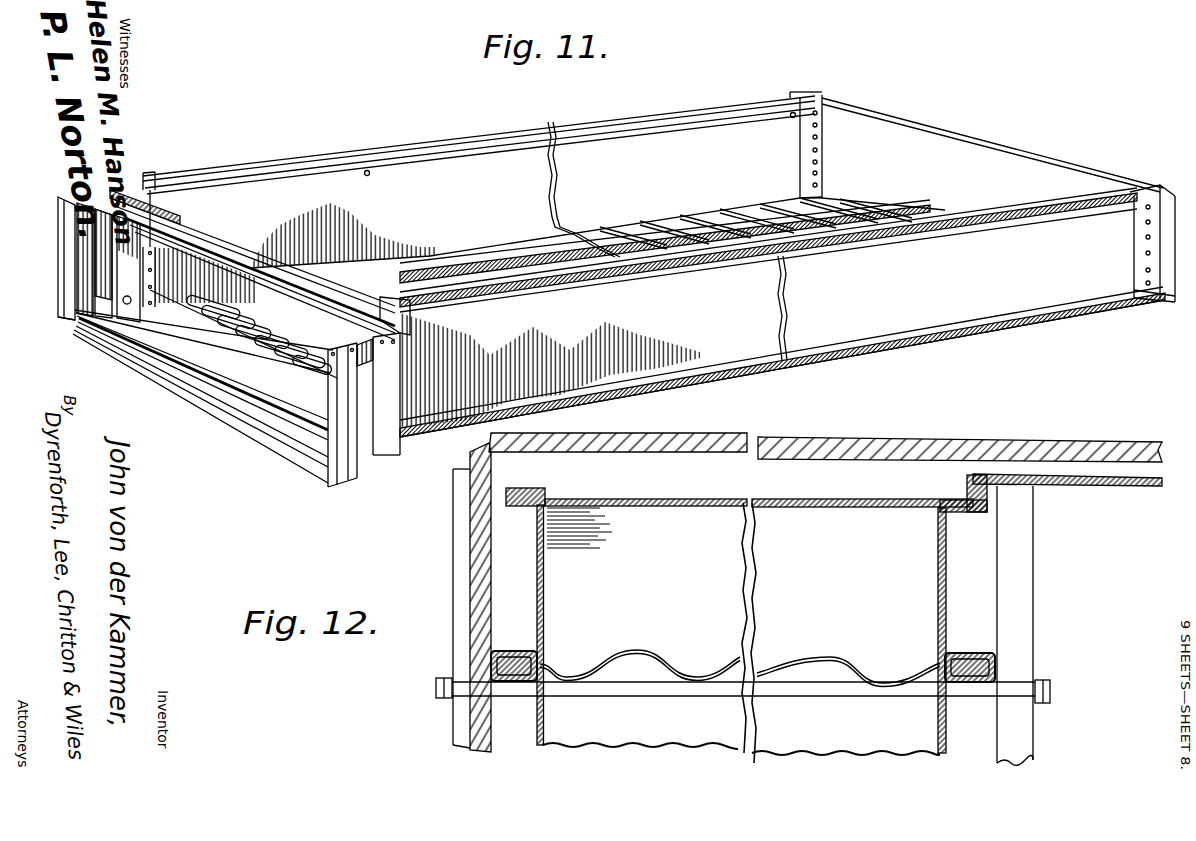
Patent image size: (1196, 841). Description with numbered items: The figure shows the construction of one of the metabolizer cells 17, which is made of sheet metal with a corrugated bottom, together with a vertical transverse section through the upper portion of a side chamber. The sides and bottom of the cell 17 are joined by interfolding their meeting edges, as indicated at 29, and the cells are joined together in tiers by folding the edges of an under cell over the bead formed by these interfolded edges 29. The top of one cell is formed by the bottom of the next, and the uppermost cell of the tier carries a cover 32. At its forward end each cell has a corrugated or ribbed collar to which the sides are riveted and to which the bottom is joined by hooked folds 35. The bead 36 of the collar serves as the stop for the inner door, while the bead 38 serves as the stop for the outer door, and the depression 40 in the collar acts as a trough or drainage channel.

In FIG. 11, the cell 17 is at (531, 312).
In FIG. 12, the cell 17 is at (741, 633).
In FIG. 11, the interfolded edges 29 is at (1028, 318).
In FIG. 12, the interfolded edges 29 is at (525, 640).
In FIG. 12, the cover 32 is at (648, 500).
In FIG. 11, the hooked folds 35 is at (1165, 212).
In FIG. 11, the bead 36 is at (177, 333).
In FIG. 11, the bead 38 is at (217, 378).
In FIG. 11, the depression 40 is at (160, 322).